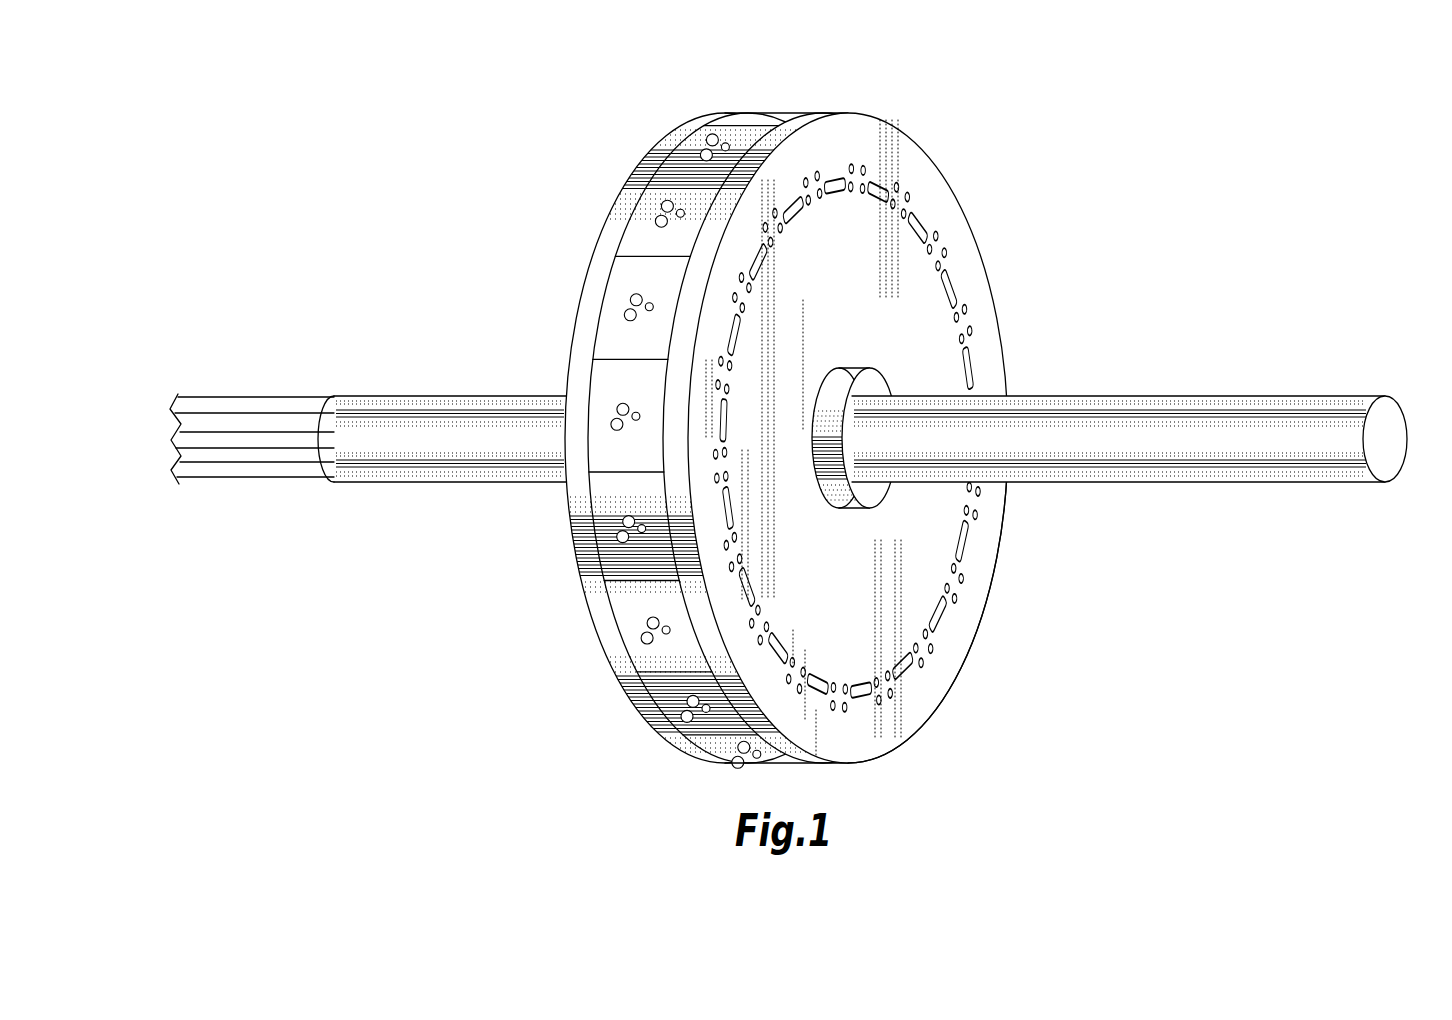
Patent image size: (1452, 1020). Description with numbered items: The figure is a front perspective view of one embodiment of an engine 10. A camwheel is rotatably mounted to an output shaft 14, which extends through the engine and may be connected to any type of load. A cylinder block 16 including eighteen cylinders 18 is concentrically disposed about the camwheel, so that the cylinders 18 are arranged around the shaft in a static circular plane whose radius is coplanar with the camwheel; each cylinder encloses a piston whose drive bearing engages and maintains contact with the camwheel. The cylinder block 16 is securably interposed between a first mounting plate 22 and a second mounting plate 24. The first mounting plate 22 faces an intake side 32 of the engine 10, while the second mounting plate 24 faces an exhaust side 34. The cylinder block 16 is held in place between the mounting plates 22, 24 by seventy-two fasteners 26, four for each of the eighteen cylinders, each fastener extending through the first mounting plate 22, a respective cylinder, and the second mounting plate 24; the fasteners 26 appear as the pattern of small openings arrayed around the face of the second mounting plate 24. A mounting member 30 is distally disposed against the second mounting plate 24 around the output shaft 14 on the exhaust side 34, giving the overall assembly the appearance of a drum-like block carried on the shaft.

The engine 10 is at (788, 387).
The output shaft 14 is at (1238, 396).
The cylinder block 16 is at (779, 387).
The cylinders 18 is at (697, 121).
The first mounting plate 22 is at (630, 172).
The second mounting plate 24 is at (935, 173).
The fasteners 26 is at (738, 285).
The mounting member 30 is at (842, 368).
The intake side 32 is at (603, 655).
The exhaust side 34 is at (968, 660).